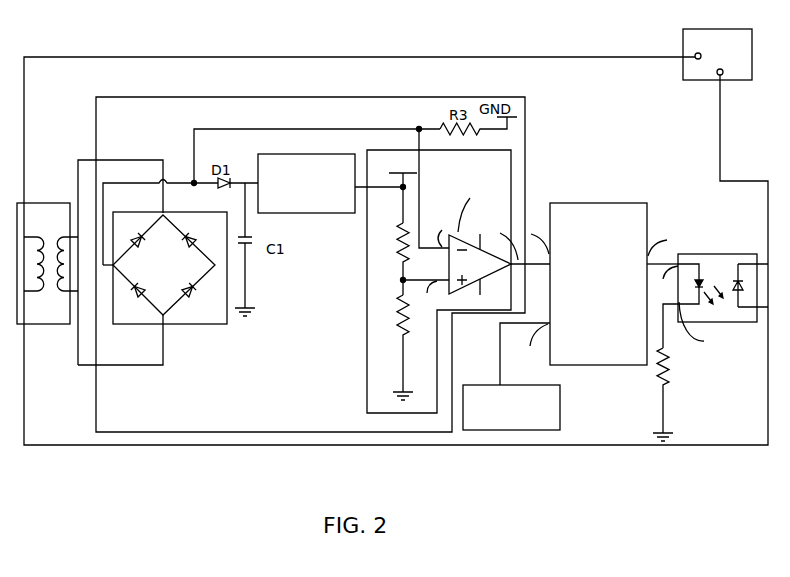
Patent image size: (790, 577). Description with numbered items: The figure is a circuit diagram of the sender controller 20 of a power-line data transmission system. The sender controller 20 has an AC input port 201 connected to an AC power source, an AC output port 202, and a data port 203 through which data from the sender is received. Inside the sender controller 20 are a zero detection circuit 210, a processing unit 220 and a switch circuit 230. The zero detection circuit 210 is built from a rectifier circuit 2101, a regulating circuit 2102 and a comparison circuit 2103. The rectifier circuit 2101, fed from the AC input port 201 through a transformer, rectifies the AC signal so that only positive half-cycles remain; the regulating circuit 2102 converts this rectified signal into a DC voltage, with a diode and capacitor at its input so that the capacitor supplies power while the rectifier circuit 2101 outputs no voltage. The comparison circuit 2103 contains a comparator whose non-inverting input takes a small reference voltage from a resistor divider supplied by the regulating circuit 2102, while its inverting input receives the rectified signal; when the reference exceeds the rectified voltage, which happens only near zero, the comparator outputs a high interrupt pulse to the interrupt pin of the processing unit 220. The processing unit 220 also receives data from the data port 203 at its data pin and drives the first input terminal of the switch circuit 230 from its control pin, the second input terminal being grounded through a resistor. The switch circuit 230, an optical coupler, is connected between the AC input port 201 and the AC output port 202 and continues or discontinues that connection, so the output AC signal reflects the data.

The sender controller 20 is at (400, 97).
The AC input port 201 is at (45, 203).
The AC output port 202 is at (683, 38).
The data port 203 is at (560, 411).
The zero detection circuit 210 is at (96, 397).
The rectifier circuit 2101 is at (186, 326).
The regulating circuit 2102 is at (298, 154).
The comparison circuit 2103 is at (512, 177).
The processing unit 220 is at (580, 203).
The switch circuit 230 is at (712, 254).